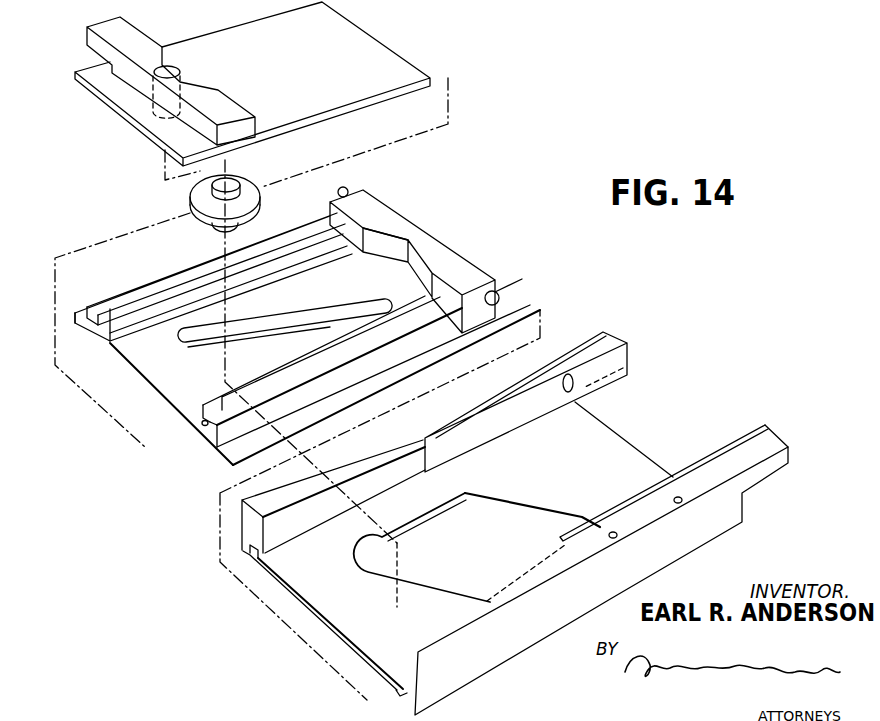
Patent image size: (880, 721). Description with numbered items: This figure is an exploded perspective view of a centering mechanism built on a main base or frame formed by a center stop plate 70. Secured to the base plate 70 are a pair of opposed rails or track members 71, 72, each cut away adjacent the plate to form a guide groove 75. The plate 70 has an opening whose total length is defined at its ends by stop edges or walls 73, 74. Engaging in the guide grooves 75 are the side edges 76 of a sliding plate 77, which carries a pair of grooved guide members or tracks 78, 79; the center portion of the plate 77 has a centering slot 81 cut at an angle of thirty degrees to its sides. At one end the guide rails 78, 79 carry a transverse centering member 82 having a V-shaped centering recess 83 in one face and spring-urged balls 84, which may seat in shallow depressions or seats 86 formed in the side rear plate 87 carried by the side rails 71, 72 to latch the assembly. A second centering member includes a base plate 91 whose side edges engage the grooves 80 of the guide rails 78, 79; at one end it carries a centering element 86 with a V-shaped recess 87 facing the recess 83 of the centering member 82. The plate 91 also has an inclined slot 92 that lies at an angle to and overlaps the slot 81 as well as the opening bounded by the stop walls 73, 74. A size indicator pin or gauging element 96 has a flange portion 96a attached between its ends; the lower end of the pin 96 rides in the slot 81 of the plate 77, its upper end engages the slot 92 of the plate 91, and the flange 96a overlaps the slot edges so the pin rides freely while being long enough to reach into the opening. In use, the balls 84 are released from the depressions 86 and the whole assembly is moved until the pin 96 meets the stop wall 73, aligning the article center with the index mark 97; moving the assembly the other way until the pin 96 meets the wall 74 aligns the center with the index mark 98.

The base plate 70 is at (582, 451).
The side rail 71 is at (777, 449).
The side rail 72 is at (526, 392).
The stop edge 73 is at (515, 507).
The stop edge 74 is at (430, 589).
The guide groove 75 is at (257, 555).
The side edge 76 is at (82, 327).
The plate 77 is at (176, 378).
The grooved guide member 78 is at (288, 372).
The grooved guide member 79 is at (173, 282).
The groove 80 is at (202, 427).
The centering slot 81 is at (292, 312).
The transverse centering member 82 is at (466, 265).
The V-shaped centering recess 83 is at (395, 242).
The spring-urged ball 84 is at (345, 189).
The depression 86 is at (232, 113).
The side rear plate 87 is at (622, 368).
The base plate 91 is at (372, 47).
The inclined slot 92 is at (185, 76).
The size indicator pin 96 is at (227, 183).
The flange portion 96a is at (258, 199).
The center index mark 97 is at (682, 498).
The center index mark 98 is at (616, 534).